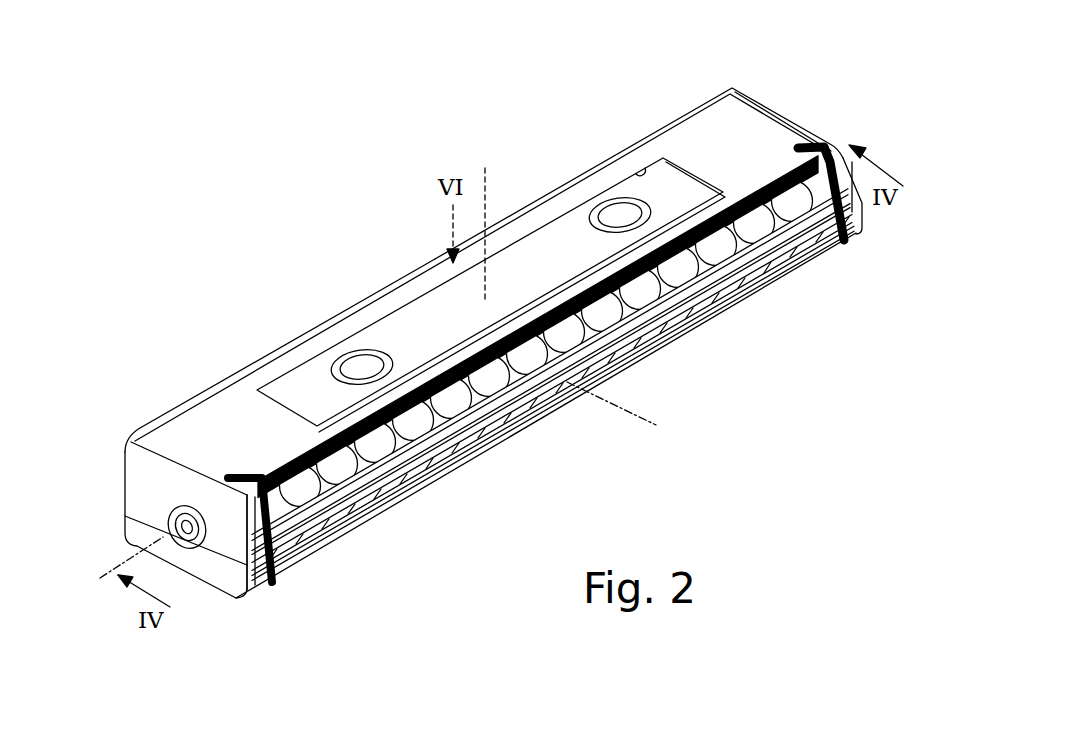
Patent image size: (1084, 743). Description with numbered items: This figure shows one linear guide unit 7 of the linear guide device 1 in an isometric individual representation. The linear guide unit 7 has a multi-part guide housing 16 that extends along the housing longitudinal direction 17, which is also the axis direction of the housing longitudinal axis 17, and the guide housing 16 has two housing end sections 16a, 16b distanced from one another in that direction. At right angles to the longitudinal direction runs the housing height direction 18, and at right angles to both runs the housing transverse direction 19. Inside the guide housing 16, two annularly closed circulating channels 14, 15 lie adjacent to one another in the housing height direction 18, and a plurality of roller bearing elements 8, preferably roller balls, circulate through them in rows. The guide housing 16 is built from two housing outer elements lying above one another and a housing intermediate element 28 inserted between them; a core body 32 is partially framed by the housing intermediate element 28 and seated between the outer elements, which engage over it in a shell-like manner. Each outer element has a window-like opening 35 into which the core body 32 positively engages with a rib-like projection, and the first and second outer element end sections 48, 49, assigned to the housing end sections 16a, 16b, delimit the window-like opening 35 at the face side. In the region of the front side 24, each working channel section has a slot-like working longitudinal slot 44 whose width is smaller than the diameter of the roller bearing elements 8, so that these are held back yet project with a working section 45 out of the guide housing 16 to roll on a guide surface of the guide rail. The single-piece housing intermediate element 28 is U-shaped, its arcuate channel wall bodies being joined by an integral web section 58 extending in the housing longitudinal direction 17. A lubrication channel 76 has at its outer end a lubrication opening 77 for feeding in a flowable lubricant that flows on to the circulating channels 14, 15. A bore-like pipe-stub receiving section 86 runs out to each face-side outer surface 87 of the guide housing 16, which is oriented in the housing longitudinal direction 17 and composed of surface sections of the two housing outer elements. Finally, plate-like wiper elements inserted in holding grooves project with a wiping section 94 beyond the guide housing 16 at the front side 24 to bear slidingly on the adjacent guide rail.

The linear guide device 1 is at (790, 100).
The linear guide unit 7 is at (152, 414).
The roller bearing elements 8 is at (706, 262).
The circulating channel 14 is at (488, 452).
The circulating channel 15 is at (430, 440).
The guide housing 16 is at (722, 100).
The first housing end section 16a is at (200, 402).
The second housing end section 16b is at (697, 108).
The housing longitudinal direction 17 is at (862, 140).
The housing height direction 18 is at (488, 168).
The housing transverse direction 19 is at (641, 425).
The front side 24 is at (565, 424).
The housing intermediate element 28 is at (790, 250).
The core body 32 is at (393, 330).
The window-like opening 35 is at (640, 170).
The working longitudinal slot 44 is at (355, 447).
The working section 45 is at (760, 244).
The first outer element end section 48 is at (147, 425).
The second outer element end section 49 is at (770, 112).
The web section 58 is at (568, 385).
The lubrication channel 76 is at (188, 530).
The lubrication opening 77 is at (170, 521).
The pipe-stub receiving section 86 is at (195, 507).
The face-side outer surface 87 is at (150, 477).
The wiping section 94 is at (293, 567).